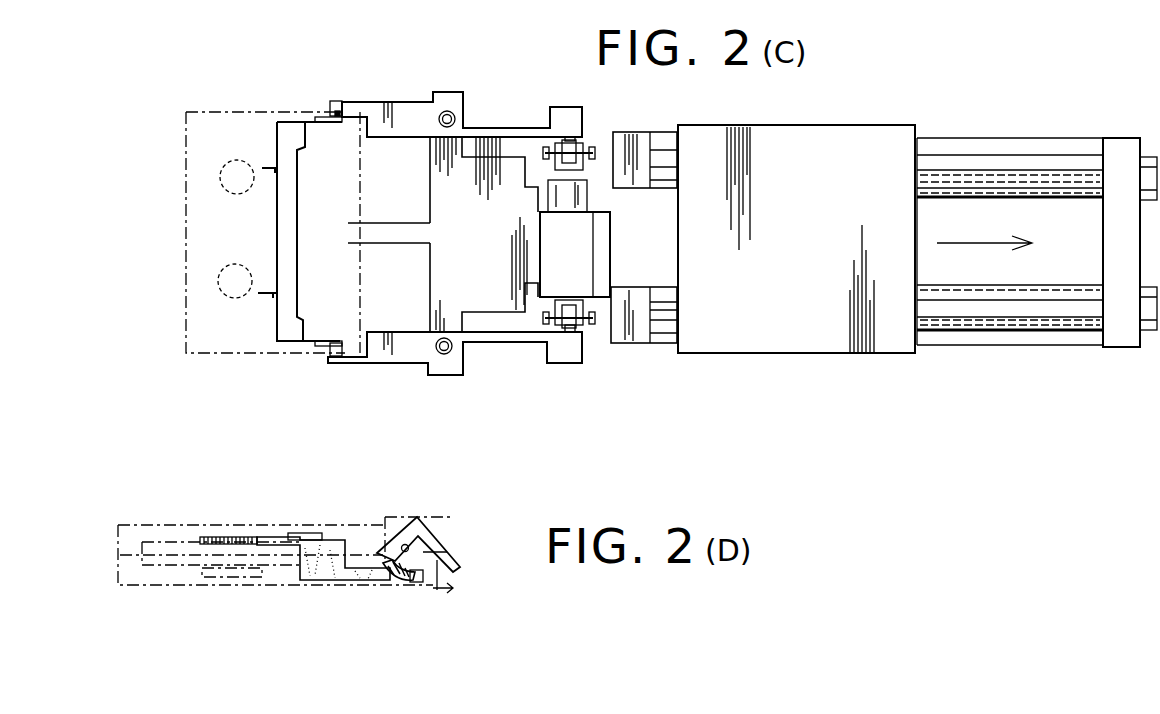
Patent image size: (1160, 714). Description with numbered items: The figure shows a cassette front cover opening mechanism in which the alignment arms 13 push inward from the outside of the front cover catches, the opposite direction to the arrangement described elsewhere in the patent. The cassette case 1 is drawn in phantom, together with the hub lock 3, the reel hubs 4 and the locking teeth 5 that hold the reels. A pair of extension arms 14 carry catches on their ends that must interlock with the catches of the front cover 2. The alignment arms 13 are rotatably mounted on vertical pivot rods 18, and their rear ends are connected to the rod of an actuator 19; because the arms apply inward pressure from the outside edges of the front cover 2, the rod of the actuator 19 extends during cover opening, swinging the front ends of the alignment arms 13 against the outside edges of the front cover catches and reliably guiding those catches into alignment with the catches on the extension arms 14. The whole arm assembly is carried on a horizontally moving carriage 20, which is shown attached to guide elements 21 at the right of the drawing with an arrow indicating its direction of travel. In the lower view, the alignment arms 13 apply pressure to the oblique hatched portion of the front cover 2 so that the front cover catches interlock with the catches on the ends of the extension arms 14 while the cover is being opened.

In FIG. 2D, the cassette case 1 is at (162, 503).
In FIG. 2D, the front cover 2 is at (437, 541).
In FIG. 2C, the hub lock 3 is at (294, 240).
In FIG. 2D, the hub lock 3 is at (318, 577).
In FIG. 2D, the reel hubs 4 is at (220, 537).
In FIG. 2C, the locking teeth 5 is at (250, 318).
In FIG. 2C, the alignment arms 13 is at (343, 103).
In FIG. 2C, the extension arms 14 is at (318, 121).
In FIG. 2C, the vertical pivot rods 18 is at (449, 116).
In FIG. 2C, the actuator 19 is at (572, 266).
In FIG. 2C, the horizontally moving carriage 20 is at (774, 293).
In FIG. 2C, the guide rods 21 is at (973, 164).